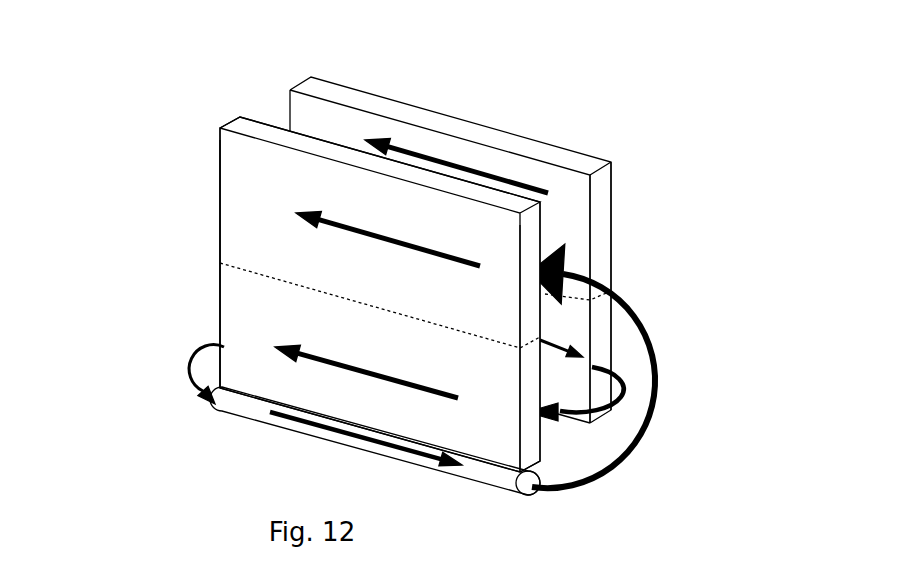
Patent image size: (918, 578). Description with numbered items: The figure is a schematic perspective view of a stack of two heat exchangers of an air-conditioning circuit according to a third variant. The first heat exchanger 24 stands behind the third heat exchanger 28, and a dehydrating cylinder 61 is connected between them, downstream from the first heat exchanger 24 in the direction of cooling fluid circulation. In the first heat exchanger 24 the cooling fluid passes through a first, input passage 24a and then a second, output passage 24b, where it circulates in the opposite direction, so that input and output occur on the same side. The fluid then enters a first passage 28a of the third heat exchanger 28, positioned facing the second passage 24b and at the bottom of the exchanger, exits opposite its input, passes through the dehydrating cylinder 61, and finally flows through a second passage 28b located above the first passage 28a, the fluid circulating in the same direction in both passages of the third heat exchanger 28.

The first heat exchanger 24 is at (482, 108).
The first, input passage 24a is at (602, 237).
The second, output passage 24b is at (607, 338).
The third heat exchanger 28 is at (255, 100).
The first passage 28a is at (240, 317).
The second passage 28b is at (237, 216).
The dehydrating cylinder 61 is at (235, 442).